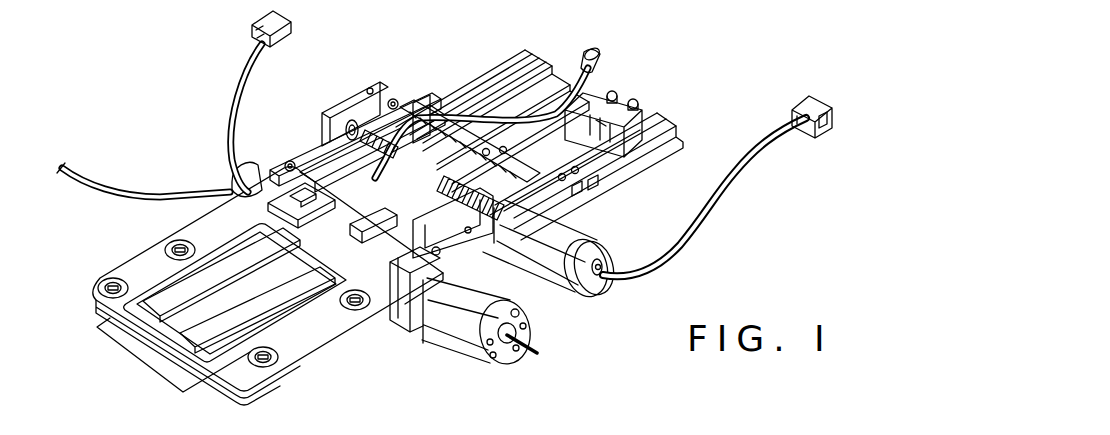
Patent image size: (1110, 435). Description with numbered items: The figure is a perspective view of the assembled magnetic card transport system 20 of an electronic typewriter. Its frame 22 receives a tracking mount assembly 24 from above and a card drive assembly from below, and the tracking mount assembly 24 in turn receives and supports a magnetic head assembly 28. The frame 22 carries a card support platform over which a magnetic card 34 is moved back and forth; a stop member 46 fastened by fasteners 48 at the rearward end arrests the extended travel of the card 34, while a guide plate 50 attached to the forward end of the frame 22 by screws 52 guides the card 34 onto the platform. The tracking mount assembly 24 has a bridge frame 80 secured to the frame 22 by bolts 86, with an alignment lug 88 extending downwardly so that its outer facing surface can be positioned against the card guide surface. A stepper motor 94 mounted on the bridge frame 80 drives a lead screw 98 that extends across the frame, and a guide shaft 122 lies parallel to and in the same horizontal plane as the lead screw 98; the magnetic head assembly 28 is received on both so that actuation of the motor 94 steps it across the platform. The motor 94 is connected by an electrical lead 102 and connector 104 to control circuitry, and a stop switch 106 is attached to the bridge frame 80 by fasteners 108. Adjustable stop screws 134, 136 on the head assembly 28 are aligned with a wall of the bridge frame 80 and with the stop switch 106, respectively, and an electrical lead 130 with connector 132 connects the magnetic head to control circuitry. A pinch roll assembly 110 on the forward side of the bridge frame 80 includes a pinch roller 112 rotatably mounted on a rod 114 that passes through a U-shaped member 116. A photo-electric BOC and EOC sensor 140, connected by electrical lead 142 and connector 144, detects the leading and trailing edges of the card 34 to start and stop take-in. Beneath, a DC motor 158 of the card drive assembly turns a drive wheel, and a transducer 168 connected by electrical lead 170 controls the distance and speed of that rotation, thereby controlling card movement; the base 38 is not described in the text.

The transport system 20 is at (551, 58).
The frame 22 is at (680, 140).
The tracking mount assembly 24 is at (350, 93).
The magnetic head assembly 28 is at (407, 114).
The magnetic card 34 is at (167, 375).
The base 38 is at (635, 429).
The stop member 46 is at (613, 113).
The fasteners 48 is at (613, 90).
The guide plate 50 is at (140, 267).
The screws 52 is at (260, 352).
The bridge frame 80 is at (335, 110).
The bolts 86 is at (288, 161).
The alignment lug 88 is at (412, 285).
The stepper motor 94 is at (600, 237).
The lead screw 98 is at (513, 232).
The electrical lead 102 is at (722, 203).
The connector 104 is at (832, 132).
The stop switch 106 is at (566, 175).
The fasteners 108 is at (575, 190).
The pinch roll assembly 110 is at (350, 262).
The pinch roller 112 is at (294, 251).
The rod 114 is at (346, 249).
The U-shaped member 116 is at (338, 243).
The guide shaft 122 is at (414, 102).
The electrical lead 130 is at (563, 100).
The connector 132 is at (600, 53).
The adjustable stop screw 134 is at (486, 148).
The adjustable stop screw 136 is at (503, 146).
The BOC and EOC sensor 140 is at (283, 193).
The electrical lead 142 is at (243, 77).
The connector 144 is at (292, 26).
The DC motor 158 is at (452, 330).
The transducer 168 is at (230, 187).
The electrical lead 170 is at (100, 182).